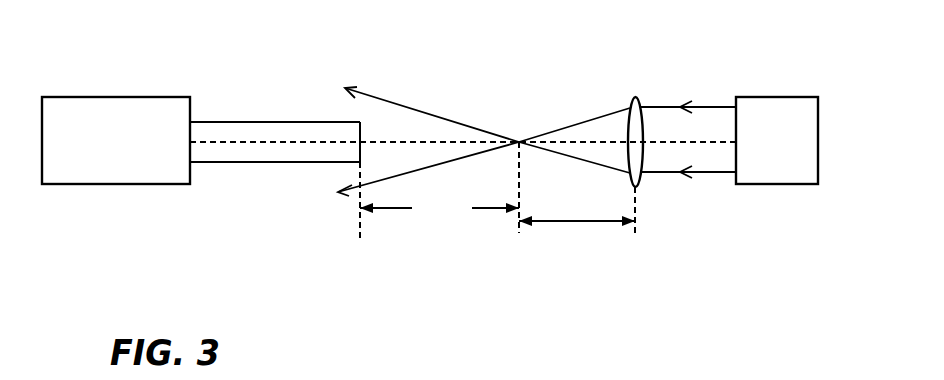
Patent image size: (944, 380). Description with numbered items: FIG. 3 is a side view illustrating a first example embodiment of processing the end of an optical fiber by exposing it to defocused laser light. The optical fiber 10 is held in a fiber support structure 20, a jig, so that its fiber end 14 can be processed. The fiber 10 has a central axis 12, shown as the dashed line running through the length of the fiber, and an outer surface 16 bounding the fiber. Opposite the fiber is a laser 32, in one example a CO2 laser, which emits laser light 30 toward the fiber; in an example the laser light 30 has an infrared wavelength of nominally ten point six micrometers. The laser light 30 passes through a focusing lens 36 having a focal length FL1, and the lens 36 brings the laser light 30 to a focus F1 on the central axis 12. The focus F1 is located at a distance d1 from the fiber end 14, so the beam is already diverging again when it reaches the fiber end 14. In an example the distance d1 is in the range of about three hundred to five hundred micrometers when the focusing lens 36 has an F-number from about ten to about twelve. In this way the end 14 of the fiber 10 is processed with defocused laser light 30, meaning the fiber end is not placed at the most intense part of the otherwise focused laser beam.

The optical fiber 10 is at (207, 54).
The central axis 12 is at (209, 142).
The fiber end 14 is at (361, 126).
The outer surface 16 is at (278, 122).
The fiber support structure 20 is at (133, 152).
The laser light 30 is at (443, 117).
The laser 32 is at (795, 153).
The focusing lens 36 is at (637, 97).
The focus F1 is at (519, 128).
The distance d1 is at (439, 209).
The focal length FL1 is at (588, 222).